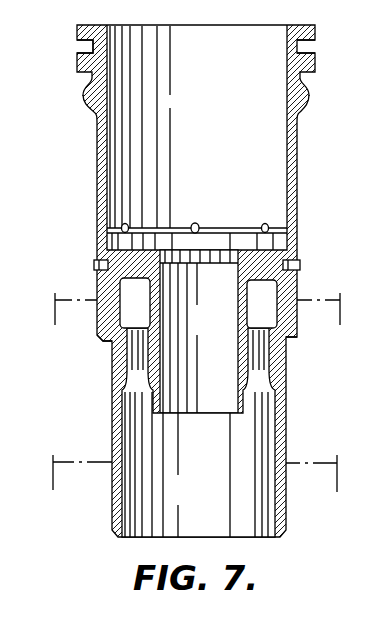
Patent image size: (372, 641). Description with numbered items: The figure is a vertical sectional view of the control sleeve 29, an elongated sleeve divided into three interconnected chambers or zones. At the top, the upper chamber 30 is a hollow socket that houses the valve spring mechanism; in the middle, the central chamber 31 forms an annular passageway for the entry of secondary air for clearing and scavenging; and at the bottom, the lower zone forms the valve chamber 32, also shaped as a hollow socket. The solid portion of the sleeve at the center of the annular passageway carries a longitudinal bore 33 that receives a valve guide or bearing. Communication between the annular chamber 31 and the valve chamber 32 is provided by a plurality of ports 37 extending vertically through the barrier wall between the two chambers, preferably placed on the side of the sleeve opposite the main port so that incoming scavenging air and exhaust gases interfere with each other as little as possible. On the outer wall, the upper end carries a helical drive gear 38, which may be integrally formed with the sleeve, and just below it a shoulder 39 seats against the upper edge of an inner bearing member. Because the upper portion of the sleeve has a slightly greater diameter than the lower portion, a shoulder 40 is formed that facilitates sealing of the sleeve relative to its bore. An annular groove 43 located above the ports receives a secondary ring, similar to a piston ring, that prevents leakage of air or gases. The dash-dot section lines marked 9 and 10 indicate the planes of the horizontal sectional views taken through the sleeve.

The control sleeve 29 is at (285, 512).
The upper chamber 30 is at (214, 136).
The central chamber 31 is at (146, 309).
The valve chamber 32 is at (217, 479).
The longitudinal bore 33 is at (215, 330).
The ports 37 is at (141, 371).
The helical drive gear 38 is at (77, 43).
The shoulder 39 is at (93, 114).
The shoulder 40 is at (99, 341).
The annular groove 43 is at (94, 264).
The section line 9- 9 is at (197, 321).
The section line 10- 10 is at (199, 485).